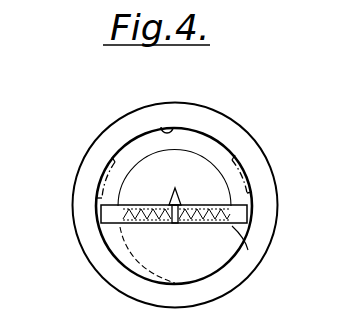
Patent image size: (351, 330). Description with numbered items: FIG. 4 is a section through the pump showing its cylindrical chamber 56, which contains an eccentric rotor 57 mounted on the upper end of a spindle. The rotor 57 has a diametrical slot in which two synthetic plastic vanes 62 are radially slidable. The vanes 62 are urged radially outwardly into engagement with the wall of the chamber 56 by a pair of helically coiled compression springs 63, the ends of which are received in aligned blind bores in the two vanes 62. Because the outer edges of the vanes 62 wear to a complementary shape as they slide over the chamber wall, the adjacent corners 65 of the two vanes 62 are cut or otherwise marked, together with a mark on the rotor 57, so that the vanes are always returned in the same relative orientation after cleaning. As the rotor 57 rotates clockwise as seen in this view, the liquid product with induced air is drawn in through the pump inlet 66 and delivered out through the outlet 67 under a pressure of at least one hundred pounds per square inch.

The cylindrical chamber 56 is at (172, 127).
The eccentric rotor 57 is at (205, 162).
The vanes 62 is at (105, 218).
The helically coiled compression springs 63 is at (176, 223).
The corners 65 is at (178, 186).
The pump inlet 66 is at (105, 175).
The outlet 67 is at (238, 165).